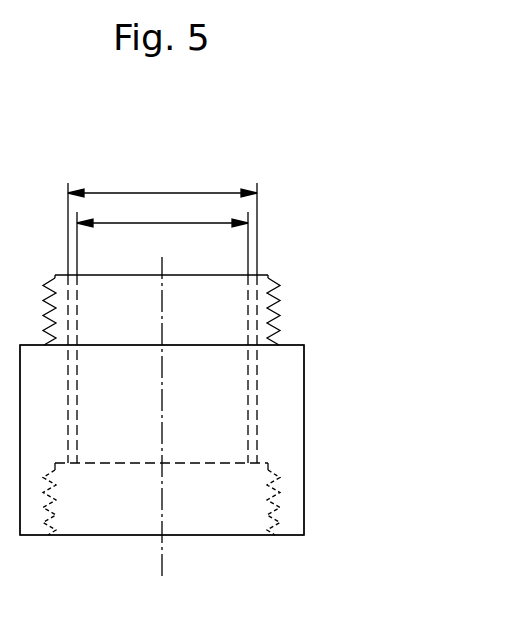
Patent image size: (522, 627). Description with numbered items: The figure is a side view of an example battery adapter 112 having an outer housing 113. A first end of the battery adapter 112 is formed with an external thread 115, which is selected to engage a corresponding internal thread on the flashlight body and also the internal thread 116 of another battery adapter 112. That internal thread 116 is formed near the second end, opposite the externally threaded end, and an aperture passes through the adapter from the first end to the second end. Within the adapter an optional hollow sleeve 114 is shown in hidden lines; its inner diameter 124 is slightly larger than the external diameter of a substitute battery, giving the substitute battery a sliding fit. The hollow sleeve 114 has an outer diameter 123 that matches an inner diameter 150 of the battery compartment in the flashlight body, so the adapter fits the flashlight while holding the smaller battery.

The battery adapter 112 is at (243, 86).
The outer housing 113 is at (304, 437).
The hollow sleeve 114 is at (77, 430).
The external thread 115 is at (274, 287).
The internal thread 116 is at (267, 515).
The inner diameter of the battery compartment 150 is at (162, 183).
The outer diameter 123 is at (188, 193).
The inner diameter 124 is at (137, 223).